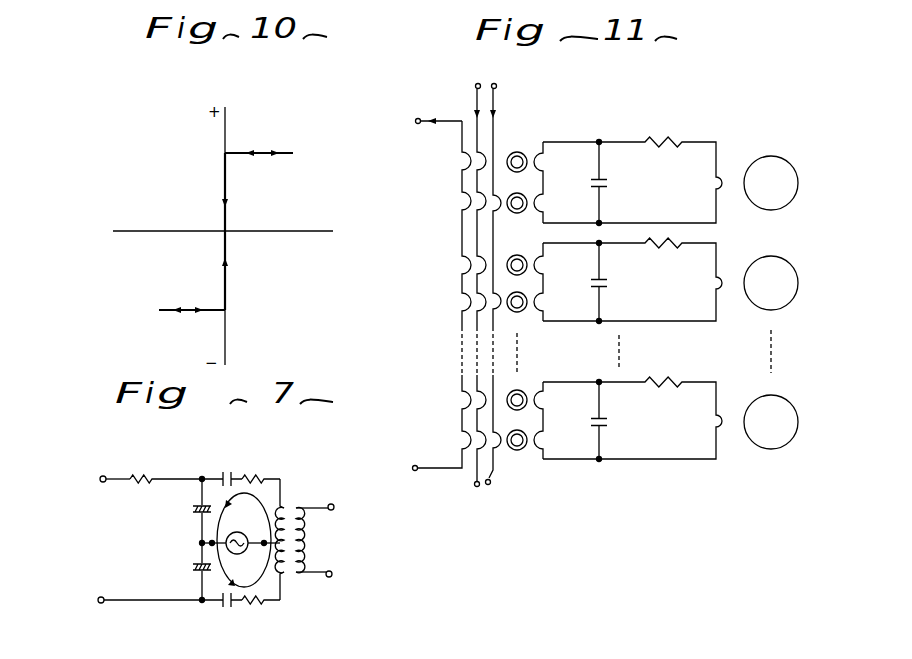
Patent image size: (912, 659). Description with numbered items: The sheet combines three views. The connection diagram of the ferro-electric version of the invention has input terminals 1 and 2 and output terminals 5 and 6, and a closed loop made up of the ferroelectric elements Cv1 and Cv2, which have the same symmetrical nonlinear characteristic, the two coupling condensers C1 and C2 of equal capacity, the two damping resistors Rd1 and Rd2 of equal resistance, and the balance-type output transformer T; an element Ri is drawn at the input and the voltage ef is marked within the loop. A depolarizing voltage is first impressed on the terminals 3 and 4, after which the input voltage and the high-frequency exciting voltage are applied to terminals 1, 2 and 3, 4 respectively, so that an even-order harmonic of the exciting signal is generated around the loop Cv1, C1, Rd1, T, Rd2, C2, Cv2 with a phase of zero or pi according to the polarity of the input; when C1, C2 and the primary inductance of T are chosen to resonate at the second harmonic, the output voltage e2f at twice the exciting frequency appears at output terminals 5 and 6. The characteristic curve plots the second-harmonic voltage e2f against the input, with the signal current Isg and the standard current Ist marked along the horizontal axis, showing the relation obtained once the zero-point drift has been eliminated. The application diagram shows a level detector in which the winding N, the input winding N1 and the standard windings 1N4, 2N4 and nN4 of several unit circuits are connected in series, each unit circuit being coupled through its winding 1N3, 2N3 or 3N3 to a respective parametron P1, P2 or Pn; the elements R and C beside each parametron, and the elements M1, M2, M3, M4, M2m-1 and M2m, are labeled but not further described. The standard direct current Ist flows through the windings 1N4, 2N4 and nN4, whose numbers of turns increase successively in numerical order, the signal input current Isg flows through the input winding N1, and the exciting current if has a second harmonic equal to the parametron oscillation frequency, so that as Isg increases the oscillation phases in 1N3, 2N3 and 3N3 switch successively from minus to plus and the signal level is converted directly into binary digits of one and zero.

In FIG. 7, the input terminal 1 is at (103, 469).
In FIG. 7, the input terminal 2 is at (134, 598).
In FIG. 7, the terminal 3 is at (214, 552).
In FIG. 7, the terminal 4 is at (264, 552).
In FIG. 7, the output terminal 5 is at (325, 505).
In FIG. 7, the output terminal 6 is at (325, 580).
In FIG. 7, the input resistor Ri is at (165, 467).
In FIG. 7, the coupling condenser C1 is at (222, 469).
In FIG. 7, the coupling condenser C2 is at (222, 610).
In FIG. 7, the damping resistor Rd1 is at (261, 467).
In FIG. 7, the damping resistor Rd2 is at (261, 611).
In FIG. 7, the ferroelectric element Cv1 is at (180, 506).
In FIG. 7, the ferroelectric element Cv2 is at (180, 565).
In FIG. 7, the voltage ef is at (244, 540).
In FIG. 7, the output transformer T is at (290, 529).
In FIG. 10, the output voltage e2f is at (243, 134).
In FIG. 7, the output voltage e2f is at (338, 540).
In FIG. 10, the standard direct current Ist is at (132, 241).
In FIG. 11, the standard direct current Ist is at (433, 130).
In FIG. 10, the signal input current Isg is at (320, 241).
In FIG. 11, the signal input current Isg is at (463, 100).
In FIG. 11, the exciting current if is at (500, 100).
In FIG. 11, the standard winding 1N4 is at (442, 171).
In FIG. 11, the standard winding 2N4 is at (440, 274).
In FIG. 11, the standard winding nN4 is at (441, 423).
In FIG. 11, the input winding N1 is at (486, 224).
In FIG. 11, the winding N is at (482, 431).
In FIG. 11, the magnetic core M1 is at (516, 154).
In FIG. 11, the magnetic core M2 is at (516, 195).
In FIG. 11, the magnetic core M3 is at (516, 257).
In FIG. 11, the magnetic core M4 is at (516, 295).
In FIG. 11, the magnetic core M2m-1 is at (514, 393).
In FIG. 11, the magnetic core M2m is at (511, 434).
In FIG. 11, the output winding 1N3 is at (553, 182).
In FIG. 11, the output winding 2N3 is at (554, 282).
In FIG. 11, the output winding 3N3 is at (553, 420).
In FIG. 11, the load resistor R is at (632, 287).
In FIG. 11, the load capacitor C is at (604, 301).
In FIG. 11, the parametron P1 is at (771, 183).
In FIG. 11, the parametron P2 is at (771, 283).
In FIG. 11, the parametron Pn is at (771, 422).